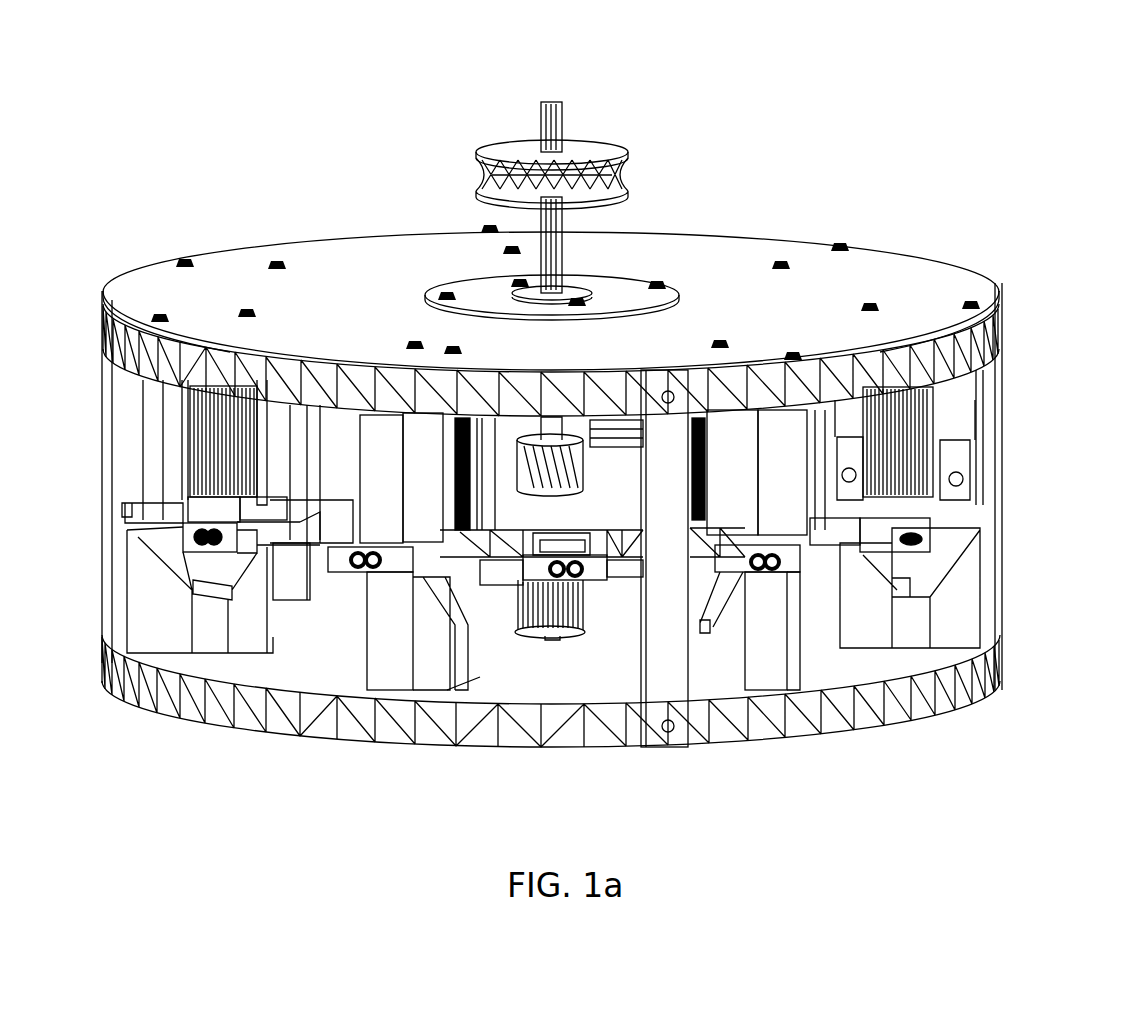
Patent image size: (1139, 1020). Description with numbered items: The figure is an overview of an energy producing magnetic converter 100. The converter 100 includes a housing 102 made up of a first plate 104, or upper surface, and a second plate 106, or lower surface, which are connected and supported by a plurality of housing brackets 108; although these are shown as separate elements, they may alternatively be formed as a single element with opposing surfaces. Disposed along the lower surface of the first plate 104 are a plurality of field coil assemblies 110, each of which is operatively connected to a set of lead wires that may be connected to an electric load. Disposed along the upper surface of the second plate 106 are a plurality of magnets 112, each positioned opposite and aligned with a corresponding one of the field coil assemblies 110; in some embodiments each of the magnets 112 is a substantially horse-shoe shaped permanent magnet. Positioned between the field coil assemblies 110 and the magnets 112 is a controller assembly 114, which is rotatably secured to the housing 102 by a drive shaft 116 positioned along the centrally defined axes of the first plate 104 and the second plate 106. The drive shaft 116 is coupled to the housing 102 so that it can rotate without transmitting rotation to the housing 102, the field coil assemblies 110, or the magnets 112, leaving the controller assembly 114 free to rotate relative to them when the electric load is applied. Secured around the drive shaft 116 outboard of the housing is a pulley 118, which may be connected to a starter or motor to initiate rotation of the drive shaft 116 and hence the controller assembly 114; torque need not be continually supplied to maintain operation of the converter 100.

The energy producing magnetic converter 100 is at (1037, 92).
The housing 102 is at (878, 241).
The first plate 104 is at (262, 244).
The second plate 106 is at (158, 712).
The housing brackets 108 is at (692, 748).
The field coil assemblies 110 is at (982, 455).
The magnets 112 is at (915, 655).
The controller assembly 114 is at (610, 592).
The drive shaft 116 is at (568, 98).
The pulley 118 is at (632, 175).